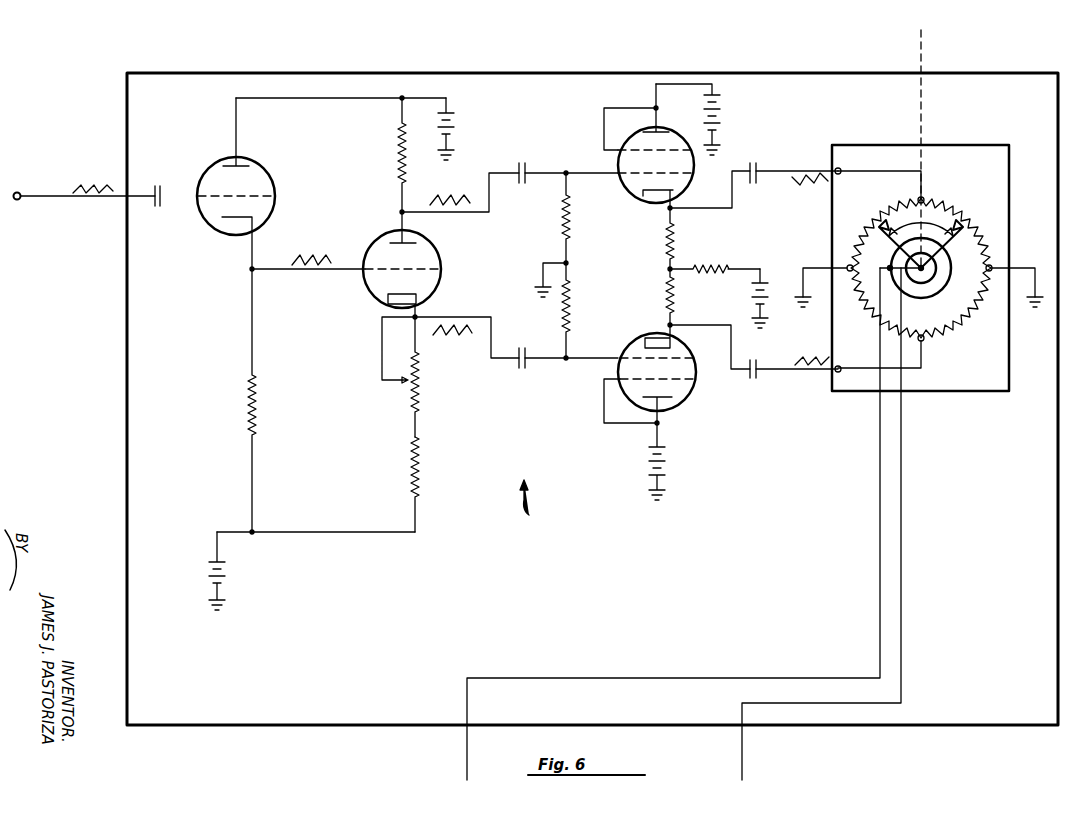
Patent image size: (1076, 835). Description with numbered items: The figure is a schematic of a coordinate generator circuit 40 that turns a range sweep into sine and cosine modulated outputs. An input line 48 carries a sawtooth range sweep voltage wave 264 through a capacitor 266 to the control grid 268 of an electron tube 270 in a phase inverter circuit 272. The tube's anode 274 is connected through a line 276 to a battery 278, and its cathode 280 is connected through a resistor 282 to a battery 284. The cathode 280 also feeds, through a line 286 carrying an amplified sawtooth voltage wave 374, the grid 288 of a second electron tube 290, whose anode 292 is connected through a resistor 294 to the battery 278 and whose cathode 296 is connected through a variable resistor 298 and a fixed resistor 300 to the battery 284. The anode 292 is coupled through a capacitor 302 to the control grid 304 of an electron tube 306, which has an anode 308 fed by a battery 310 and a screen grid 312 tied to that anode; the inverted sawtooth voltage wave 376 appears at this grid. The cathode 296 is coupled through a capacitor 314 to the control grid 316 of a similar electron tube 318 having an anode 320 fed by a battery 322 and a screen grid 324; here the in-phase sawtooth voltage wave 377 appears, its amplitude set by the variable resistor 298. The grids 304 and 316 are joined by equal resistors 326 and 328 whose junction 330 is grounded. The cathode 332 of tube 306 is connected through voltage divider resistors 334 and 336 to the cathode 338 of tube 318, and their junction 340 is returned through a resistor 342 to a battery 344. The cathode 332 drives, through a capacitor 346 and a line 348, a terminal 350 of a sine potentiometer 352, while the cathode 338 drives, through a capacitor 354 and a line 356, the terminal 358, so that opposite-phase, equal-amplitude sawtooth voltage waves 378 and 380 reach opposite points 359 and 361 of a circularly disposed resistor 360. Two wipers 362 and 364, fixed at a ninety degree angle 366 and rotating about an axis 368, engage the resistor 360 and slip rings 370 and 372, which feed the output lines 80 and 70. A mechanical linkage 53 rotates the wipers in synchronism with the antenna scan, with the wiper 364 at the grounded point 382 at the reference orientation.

The coordinate generator circuit 40 is at (495, 73).
The input line 48 is at (92, 202).
The mechanical linkage 53 is at (924, 55).
The output line 70 is at (879, 554).
The output line 80 is at (905, 522).
The sawtooth range sweep voltage wave 264 is at (80, 190).
The capacitor 266 is at (157, 186).
The control grid 268 is at (258, 196).
The electron tube 270 is at (209, 221).
The phase inverter circuit 272 is at (544, 501).
The anode 274 is at (245, 165).
The line 276 is at (280, 98).
The battery 278 is at (456, 120).
The cathode 280 is at (258, 220).
The resistor 282 is at (256, 408).
The battery 284 is at (226, 568).
The line 286 is at (300, 272).
The grid 288 is at (425, 269).
The electron tube 290 is at (436, 250).
The anode 292 is at (395, 240).
The resistor 294 is at (399, 152).
The cathode 296 is at (425, 300).
The variable resistor 298 is at (420, 382).
The fixed resistor 300 is at (420, 468).
The capacitor 302 is at (527, 165).
The control grid 304 is at (680, 173).
The electron tube 306 is at (624, 190).
The anode 308 is at (662, 128).
The battery 310 is at (722, 105).
The screen grid 312 is at (621, 157).
The capacitor 314 is at (515, 375).
The control grid 316 is at (684, 355).
The electron tube 318 is at (696, 379).
The anode 320 is at (670, 400).
The battery 322 is at (667, 455).
The screen grid 324 is at (620, 363).
The resistor 326 is at (563, 230).
The resistor 328 is at (563, 318).
The junction 330 is at (568, 268).
The cathode 332 is at (675, 193).
The voltage divider resistor 334 is at (667, 243).
The voltage divider resistor 336 is at (675, 300).
The cathode 338 is at (656, 337).
The junction 340 is at (667, 269).
The resistor 342 is at (705, 262).
The battery 344 is at (768, 262).
The capacitor 346 is at (754, 162).
The line 348 is at (780, 170).
The terminal 350 is at (840, 168).
The sine potentiometer 352 is at (965, 145).
The coupling capacitor 354 is at (752, 360).
The line 356 is at (770, 372).
The terminal 358 is at (838, 372).
The point 359 is at (924, 197).
The circularly disposed resistor 360 is at (955, 215).
The point 361 is at (924, 341).
The wiper 362 is at (980, 250).
The wiper 364 is at (847, 265).
The ninety degree angle 366 is at (908, 215).
The axis 368 is at (951, 268).
The slip ring 370 is at (936, 262).
The slip ring 372 is at (902, 290).
The sawtooth voltage wave 374 is at (305, 255).
The sawtooth voltage wave 376 is at (440, 196).
The sawtooth voltage wave 377 is at (440, 337).
The sawtooth voltage wave 378 is at (800, 186).
The sawtooth voltage wave 380 is at (795, 355).
The grounded point 382 is at (1000, 265).